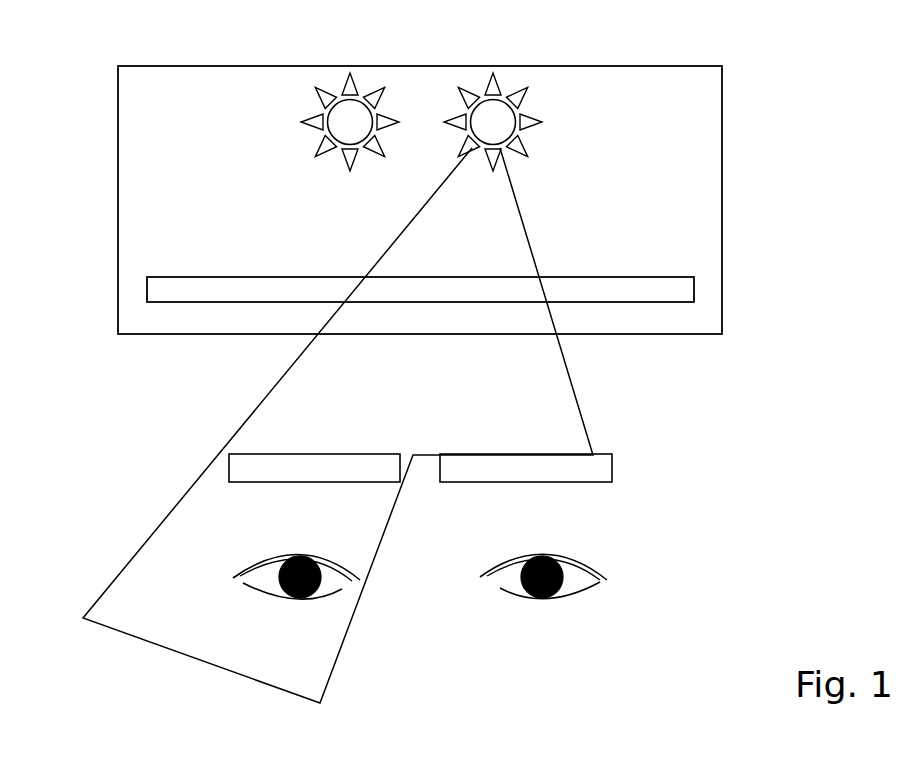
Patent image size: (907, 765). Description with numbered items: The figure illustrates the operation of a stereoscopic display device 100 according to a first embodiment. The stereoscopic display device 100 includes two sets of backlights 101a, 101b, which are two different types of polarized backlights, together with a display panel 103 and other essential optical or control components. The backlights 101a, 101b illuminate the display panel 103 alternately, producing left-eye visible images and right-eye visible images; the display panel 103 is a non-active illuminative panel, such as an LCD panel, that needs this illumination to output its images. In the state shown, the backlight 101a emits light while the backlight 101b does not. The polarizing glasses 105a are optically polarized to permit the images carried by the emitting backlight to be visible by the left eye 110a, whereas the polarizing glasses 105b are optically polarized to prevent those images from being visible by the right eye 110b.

The stereoscopic display device 100 is at (674, 66).
The backlight 101a is at (503, 105).
The backlight 101b is at (362, 98).
The display panel 103 is at (685, 292).
The polarizing glasses 105a is at (345, 483).
The polarizing glasses 105b is at (613, 469).
The left eye 110a is at (303, 598).
The right eye 110b is at (545, 602).